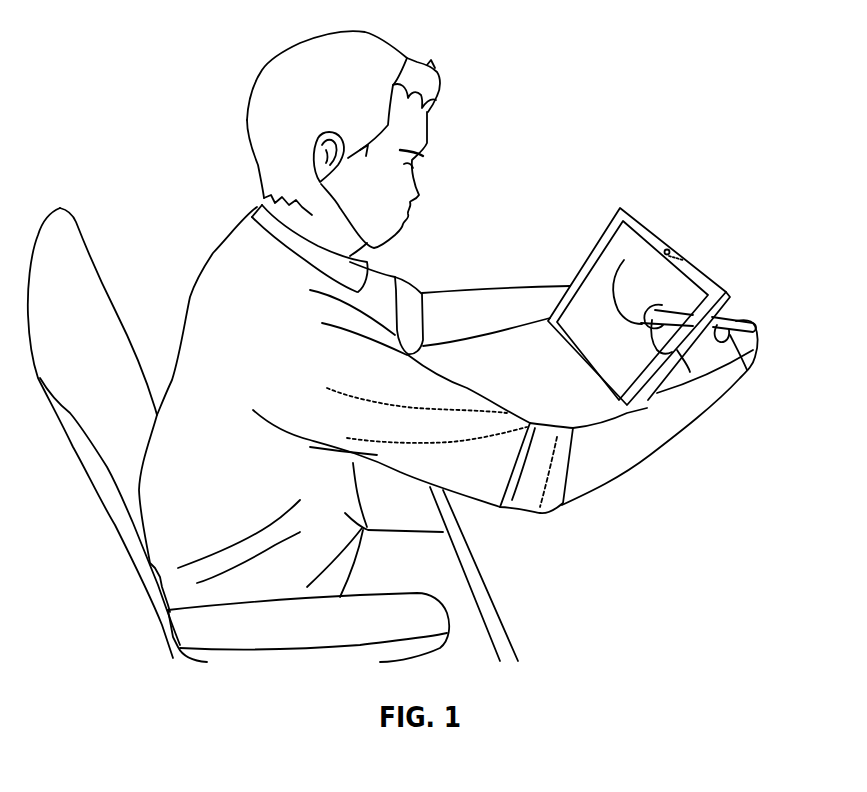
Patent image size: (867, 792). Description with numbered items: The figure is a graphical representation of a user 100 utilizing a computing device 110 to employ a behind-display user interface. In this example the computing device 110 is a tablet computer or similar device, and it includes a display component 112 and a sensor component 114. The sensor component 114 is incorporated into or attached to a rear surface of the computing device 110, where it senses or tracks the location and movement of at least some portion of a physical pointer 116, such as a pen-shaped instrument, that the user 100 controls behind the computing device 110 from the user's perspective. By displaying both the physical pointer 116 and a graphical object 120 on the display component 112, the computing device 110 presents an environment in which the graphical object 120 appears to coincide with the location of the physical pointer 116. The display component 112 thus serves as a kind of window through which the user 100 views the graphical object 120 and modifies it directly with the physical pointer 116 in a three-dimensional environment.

The user 100 is at (184, 148).
The computing device 110 is at (588, 180).
The display component 112 is at (592, 300).
The sensor component 114 is at (683, 260).
The physical pointer 116 is at (755, 330).
The graphical object 120 is at (618, 268).